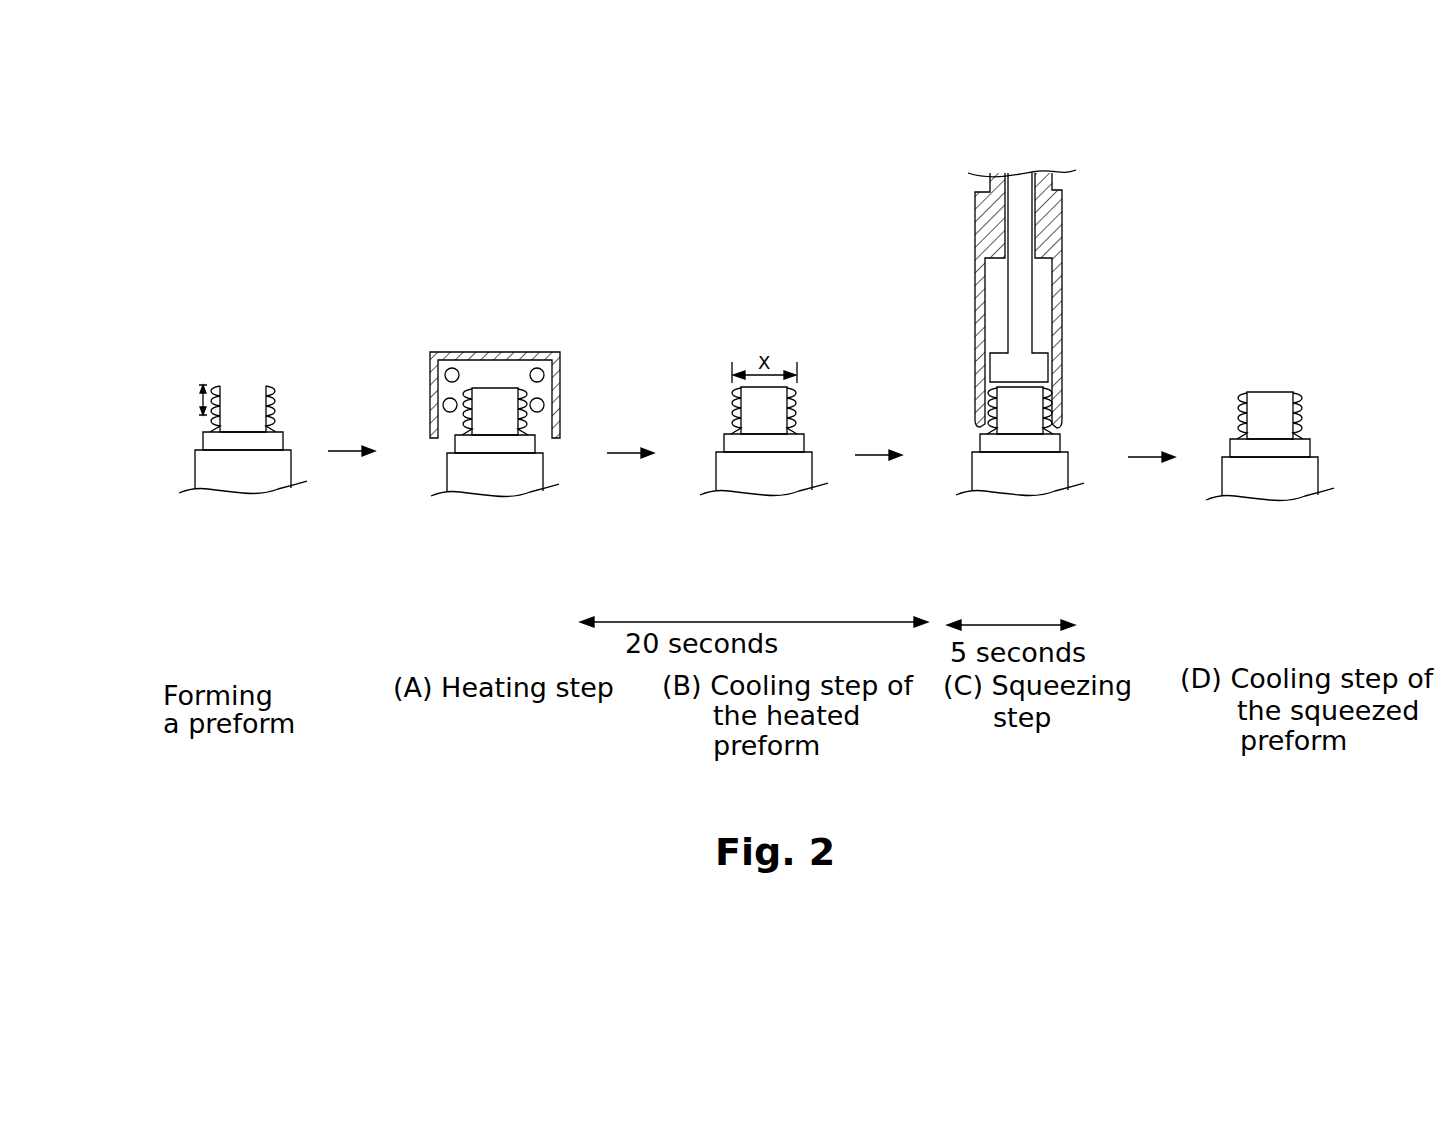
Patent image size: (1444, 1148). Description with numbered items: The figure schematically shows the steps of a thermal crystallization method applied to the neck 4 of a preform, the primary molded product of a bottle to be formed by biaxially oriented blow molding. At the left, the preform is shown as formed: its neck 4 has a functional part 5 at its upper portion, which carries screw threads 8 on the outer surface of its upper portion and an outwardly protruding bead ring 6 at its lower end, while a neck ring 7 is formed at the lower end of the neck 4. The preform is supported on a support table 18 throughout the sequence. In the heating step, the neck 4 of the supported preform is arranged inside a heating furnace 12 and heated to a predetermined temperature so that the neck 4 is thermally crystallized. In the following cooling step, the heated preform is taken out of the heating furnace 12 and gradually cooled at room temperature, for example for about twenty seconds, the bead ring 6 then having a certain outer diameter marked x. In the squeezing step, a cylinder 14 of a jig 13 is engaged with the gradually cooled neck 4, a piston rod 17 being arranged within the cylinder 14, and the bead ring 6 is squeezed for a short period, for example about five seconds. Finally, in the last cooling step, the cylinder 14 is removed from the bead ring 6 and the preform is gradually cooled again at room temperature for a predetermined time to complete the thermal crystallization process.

The neck 4 is at (225, 391).
The functional part 5 is at (218, 376).
The bead ring 6 is at (271, 409).
The neck ring 7 is at (215, 426).
The screw threads 8 is at (267, 391).
The heating furnace 12 is at (556, 372).
The jig 13 is at (1021, 299).
The cylinder 14 is at (1066, 338).
The piston rod 17 is at (1034, 305).
The support table 18 is at (217, 472).